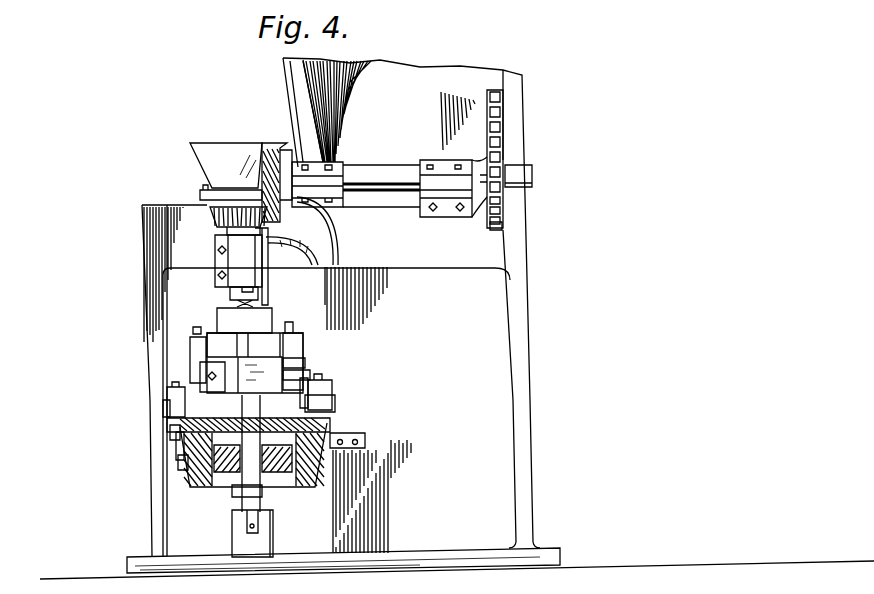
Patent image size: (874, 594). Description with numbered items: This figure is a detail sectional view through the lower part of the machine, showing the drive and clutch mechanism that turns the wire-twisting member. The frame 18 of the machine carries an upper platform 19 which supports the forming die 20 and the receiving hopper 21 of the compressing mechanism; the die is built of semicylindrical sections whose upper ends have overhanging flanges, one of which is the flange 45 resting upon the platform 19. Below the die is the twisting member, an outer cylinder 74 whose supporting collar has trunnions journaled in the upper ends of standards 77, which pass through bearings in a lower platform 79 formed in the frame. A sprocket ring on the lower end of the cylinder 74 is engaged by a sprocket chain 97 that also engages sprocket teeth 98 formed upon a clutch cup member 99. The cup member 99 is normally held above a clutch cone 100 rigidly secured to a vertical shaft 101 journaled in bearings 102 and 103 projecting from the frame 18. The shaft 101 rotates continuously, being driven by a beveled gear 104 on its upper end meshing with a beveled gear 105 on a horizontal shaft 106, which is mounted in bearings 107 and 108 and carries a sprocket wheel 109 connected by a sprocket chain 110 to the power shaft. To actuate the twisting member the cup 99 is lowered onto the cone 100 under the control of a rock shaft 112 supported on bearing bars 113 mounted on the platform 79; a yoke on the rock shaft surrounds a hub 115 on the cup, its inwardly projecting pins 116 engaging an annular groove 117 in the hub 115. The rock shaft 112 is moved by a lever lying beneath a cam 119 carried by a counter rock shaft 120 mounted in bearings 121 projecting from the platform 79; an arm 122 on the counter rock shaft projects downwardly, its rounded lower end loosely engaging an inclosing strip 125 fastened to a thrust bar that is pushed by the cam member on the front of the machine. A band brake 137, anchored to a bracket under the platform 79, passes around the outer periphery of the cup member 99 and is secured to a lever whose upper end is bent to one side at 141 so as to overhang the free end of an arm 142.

The frame 18 is at (512, 88).
The platform 19 is at (326, 380).
The forming die 20 is at (278, 293).
The receiving hopper 21 is at (217, 150).
The overhanging flange 45 is at (200, 197).
The outer cylinder 74 is at (280, 312).
The standards 77 is at (318, 378).
The platform 79 is at (333, 392).
The sprocket chain 97 is at (165, 423).
The sprocket teeth 98 is at (168, 432).
The clutch cup member 99 is at (183, 473).
The clutch cone 100 is at (202, 488).
The vertical shaft 101 is at (263, 492).
The bearing 102 is at (250, 541).
The bearing 103 is at (241, 267).
The beveled gear 104 is at (185, 212).
The beveled gear 105 is at (268, 145).
The horizontal shaft 106 is at (391, 175).
The bearing 107 is at (327, 180).
The bearing 108 is at (450, 185).
The sprocket wheel 109 is at (495, 232).
The sprocket chain 110 is at (507, 116).
The rock shaft 112 is at (165, 407).
The bearing bars 113 is at (167, 392).
The hub 115 is at (333, 427).
The pins 116 is at (220, 370).
The annular groove 117 is at (178, 440).
The cam 119 is at (194, 333).
The counter rock shaft 120 is at (270, 342).
The bearings 121 is at (292, 329).
The arm 122 is at (303, 360).
The inclosing strip 125 is at (335, 384).
The band brake 137 is at (180, 457).
The bent upper end of lever 141 is at (244, 322).
The arm 142 is at (224, 345).